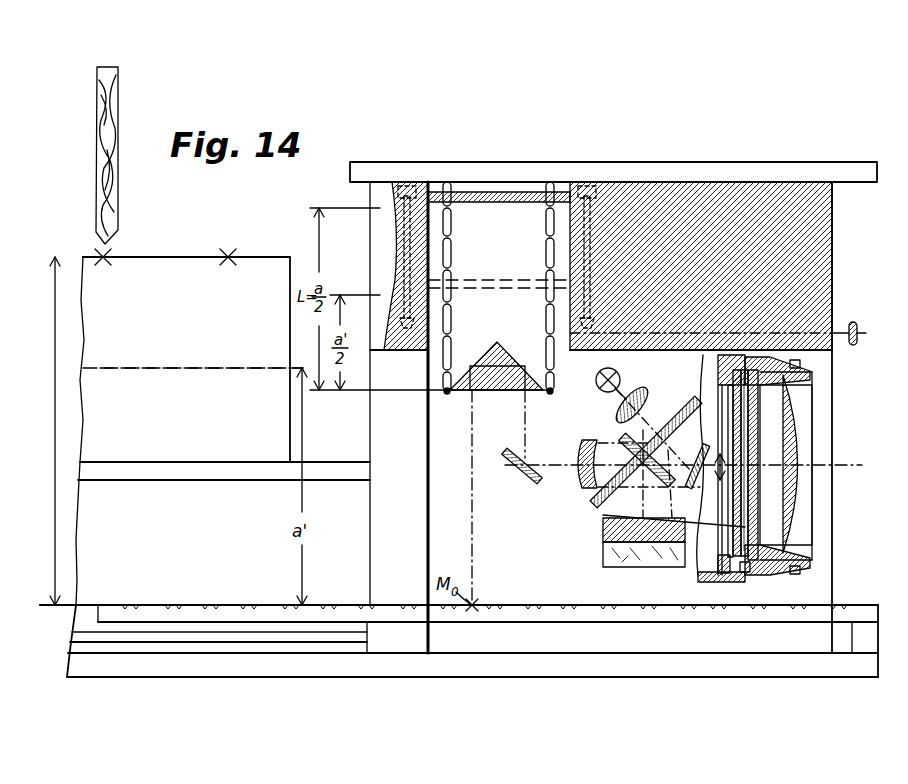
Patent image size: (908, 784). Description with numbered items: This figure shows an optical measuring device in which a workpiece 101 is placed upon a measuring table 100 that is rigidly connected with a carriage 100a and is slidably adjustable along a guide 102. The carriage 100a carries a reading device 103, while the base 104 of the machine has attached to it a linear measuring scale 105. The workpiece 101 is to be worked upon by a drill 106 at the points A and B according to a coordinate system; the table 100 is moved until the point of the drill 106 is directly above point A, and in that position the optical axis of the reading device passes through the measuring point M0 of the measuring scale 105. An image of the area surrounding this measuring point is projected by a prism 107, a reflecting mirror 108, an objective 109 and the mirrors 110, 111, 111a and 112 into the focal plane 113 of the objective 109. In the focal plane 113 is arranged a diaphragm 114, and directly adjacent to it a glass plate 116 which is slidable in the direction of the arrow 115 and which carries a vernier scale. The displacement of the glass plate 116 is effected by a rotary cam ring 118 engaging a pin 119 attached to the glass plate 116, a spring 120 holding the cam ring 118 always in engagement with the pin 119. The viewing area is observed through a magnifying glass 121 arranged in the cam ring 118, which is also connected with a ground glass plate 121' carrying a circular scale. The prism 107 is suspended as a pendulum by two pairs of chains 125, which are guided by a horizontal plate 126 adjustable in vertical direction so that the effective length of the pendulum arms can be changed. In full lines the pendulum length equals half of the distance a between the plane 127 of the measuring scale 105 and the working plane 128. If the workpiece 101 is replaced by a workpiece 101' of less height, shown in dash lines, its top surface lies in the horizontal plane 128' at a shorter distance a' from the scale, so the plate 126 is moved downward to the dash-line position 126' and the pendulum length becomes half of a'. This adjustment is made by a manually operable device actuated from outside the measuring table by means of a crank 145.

The measuring table 100 is at (186, 475).
The carriage 100a is at (777, 170).
The workpiece 101 is at (186, 243).
The workpiece of less height 101' is at (201, 355).
The guide 102 is at (138, 647).
The reading device 103 is at (775, 477).
The base 104 is at (485, 668).
The measuring scale 105 is at (516, 612).
The drill 106 is at (100, 162).
The prism 107 is at (458, 392).
The reflecting mirror 108 is at (512, 462).
The objective 109 is at (578, 452).
The mirror 110 is at (620, 436).
The mirror 111 is at (637, 568).
The mirror 111a is at (644, 554).
The mirror 112 is at (676, 418).
The focal plane 113 is at (742, 497).
The diaphragm 114 is at (790, 568).
The arrow 115 is at (708, 474).
The glass plate 116 is at (738, 426).
The rotary cam ring 118 is at (775, 383).
The pin 119 is at (747, 572).
The spring 120 is at (710, 578).
The magnifying glass 121 is at (817, 466).
The ground glass plate 121' is at (811, 465).
The chains 125 is at (546, 222).
The horizontal plate 126 is at (499, 163).
The lowered plate position 126' is at (499, 300).
The plane of the measuring scale 127 is at (88, 605).
The working plane 128 is at (166, 408).
The horizontal plane 128' is at (193, 349).
The crank 145 is at (852, 321).